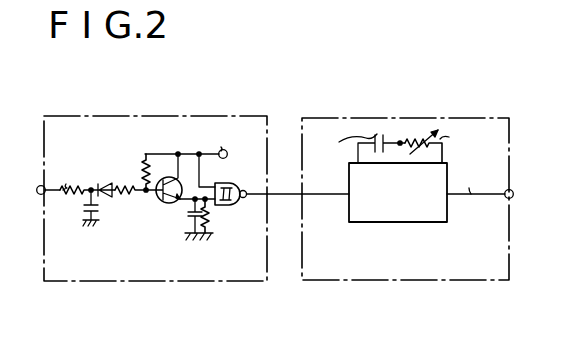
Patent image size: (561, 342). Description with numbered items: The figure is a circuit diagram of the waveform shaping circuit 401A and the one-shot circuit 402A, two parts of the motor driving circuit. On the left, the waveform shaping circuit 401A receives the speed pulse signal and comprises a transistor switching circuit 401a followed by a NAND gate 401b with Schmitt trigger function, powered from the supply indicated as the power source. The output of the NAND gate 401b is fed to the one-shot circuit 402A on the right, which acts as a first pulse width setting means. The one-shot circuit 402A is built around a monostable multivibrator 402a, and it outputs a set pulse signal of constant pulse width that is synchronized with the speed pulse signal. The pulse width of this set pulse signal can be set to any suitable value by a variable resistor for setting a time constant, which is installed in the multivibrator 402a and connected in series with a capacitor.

The waveform shaping circuit 401A is at (176, 116).
The transistor switching circuit 401a is at (160, 199).
The NAND gate 401b is at (236, 208).
The one-shot circuit 402A is at (397, 118).
The monostable multivibrator 402a is at (379, 223).